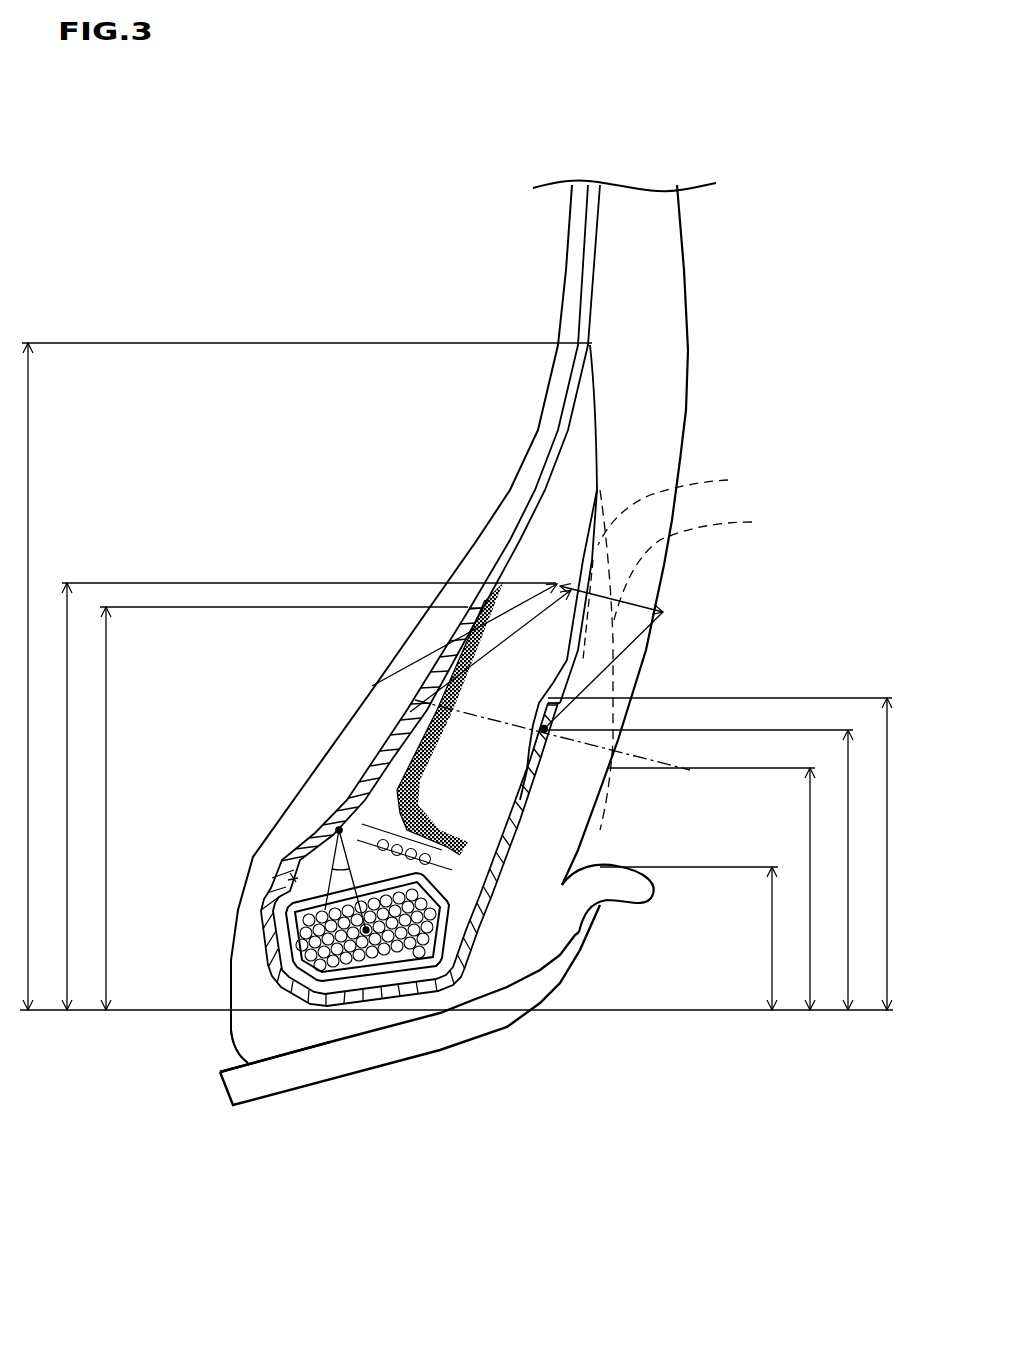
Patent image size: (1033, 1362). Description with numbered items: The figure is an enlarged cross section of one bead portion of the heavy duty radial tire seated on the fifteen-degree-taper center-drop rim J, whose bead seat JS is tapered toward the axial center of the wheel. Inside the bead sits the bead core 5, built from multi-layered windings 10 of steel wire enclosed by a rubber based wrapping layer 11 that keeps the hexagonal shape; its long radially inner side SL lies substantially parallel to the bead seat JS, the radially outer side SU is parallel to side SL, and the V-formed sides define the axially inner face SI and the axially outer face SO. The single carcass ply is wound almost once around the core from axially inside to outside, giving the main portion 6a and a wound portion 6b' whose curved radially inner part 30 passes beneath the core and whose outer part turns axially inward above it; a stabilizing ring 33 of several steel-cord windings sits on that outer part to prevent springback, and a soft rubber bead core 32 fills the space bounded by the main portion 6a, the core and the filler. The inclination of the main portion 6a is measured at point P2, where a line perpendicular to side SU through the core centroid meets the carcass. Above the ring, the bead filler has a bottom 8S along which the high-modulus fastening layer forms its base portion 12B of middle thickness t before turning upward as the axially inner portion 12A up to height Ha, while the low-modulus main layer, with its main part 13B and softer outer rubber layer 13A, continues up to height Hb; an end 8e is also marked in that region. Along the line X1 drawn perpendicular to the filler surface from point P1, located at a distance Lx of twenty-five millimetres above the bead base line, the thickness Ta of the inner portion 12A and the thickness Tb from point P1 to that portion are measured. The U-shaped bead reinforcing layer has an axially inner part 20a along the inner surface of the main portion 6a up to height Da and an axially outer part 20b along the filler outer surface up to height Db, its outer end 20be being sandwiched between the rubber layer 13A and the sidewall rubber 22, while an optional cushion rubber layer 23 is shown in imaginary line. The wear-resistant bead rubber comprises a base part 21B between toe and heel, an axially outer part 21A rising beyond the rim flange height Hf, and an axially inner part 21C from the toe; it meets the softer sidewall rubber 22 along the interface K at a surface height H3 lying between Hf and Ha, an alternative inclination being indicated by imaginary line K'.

The bead core 5 is at (563, 1103).
The carcass ply main portion 6a is at (588, 280).
The wound portion of carcass ply 6b' is at (250, 761).
The outer end of turnup 8e is at (598, 342).
The bottom of bead filler 8S is at (375, 768).
The multi-layered windings 10 is at (463, 960).
The rubber based wrapping layer 11 is at (487, 960).
The axially inner portion of fastening layer 12A is at (380, 752).
The base portion of fastening layer 12B is at (540, 858).
The rubber layer of main layer 13A is at (585, 500).
The main part of main layer 13B is at (560, 520).
The axially inner part of bead reinforcing layer 20a is at (330, 860).
The axially outer part of bead reinforcing layer 20b is at (457, 853).
The radially outer end of bead reinforcing layer 20be is at (556, 697).
The axially outer part of bead rubber 21A is at (530, 900).
The base part of bead rubber 21B is at (303, 1042).
The axially inner part of bead rubber 21C is at (237, 1023).
The sidewall rubber 22 is at (655, 381).
The cushion rubber layer 23 is at (680, 505).
The curved radially inner part of wound portion 30 is at (407, 960).
The rubber bead core 32 is at (325, 845).
The stabilizing ring 33 is at (350, 755).
The 15-degree-taper center-drop rim J is at (252, 1102).
The bead seat JS is at (215, 1058).
The interface between bead rubber and sidewall rubber K is at (552, 775).
The imaginary interface K' is at (682, 660).
The point on bead filler outer surface P1 is at (540, 731).
The intersecting point P2 is at (339, 830).
The axially inner face of bead core SI is at (282, 922).
The radially outer side of bead core SU is at (293, 877).
The radially inner side of bead core SL is at (380, 960).
The axially outer face of bead core SO is at (545, 950).
The straight line X1 is at (610, 755).
The thickness of axially inner portion Ta is at (556, 580).
The thickness from point P1 to inner portion Tb is at (660, 604).
The thickness of base portion middle part t is at (432, 796).
The radial height of main layer Hb is at (298, 676).
The radial height of fastening layer Ha is at (301, 796).
The radial height of axially inner part Da is at (276, 808).
The wheel rim flange height Hf is at (694, 938).
The height of boundary H3 is at (718, 889).
The radial distance of point P1 Lx is at (704, 870).
The radial height of axially outer part Db is at (726, 854).